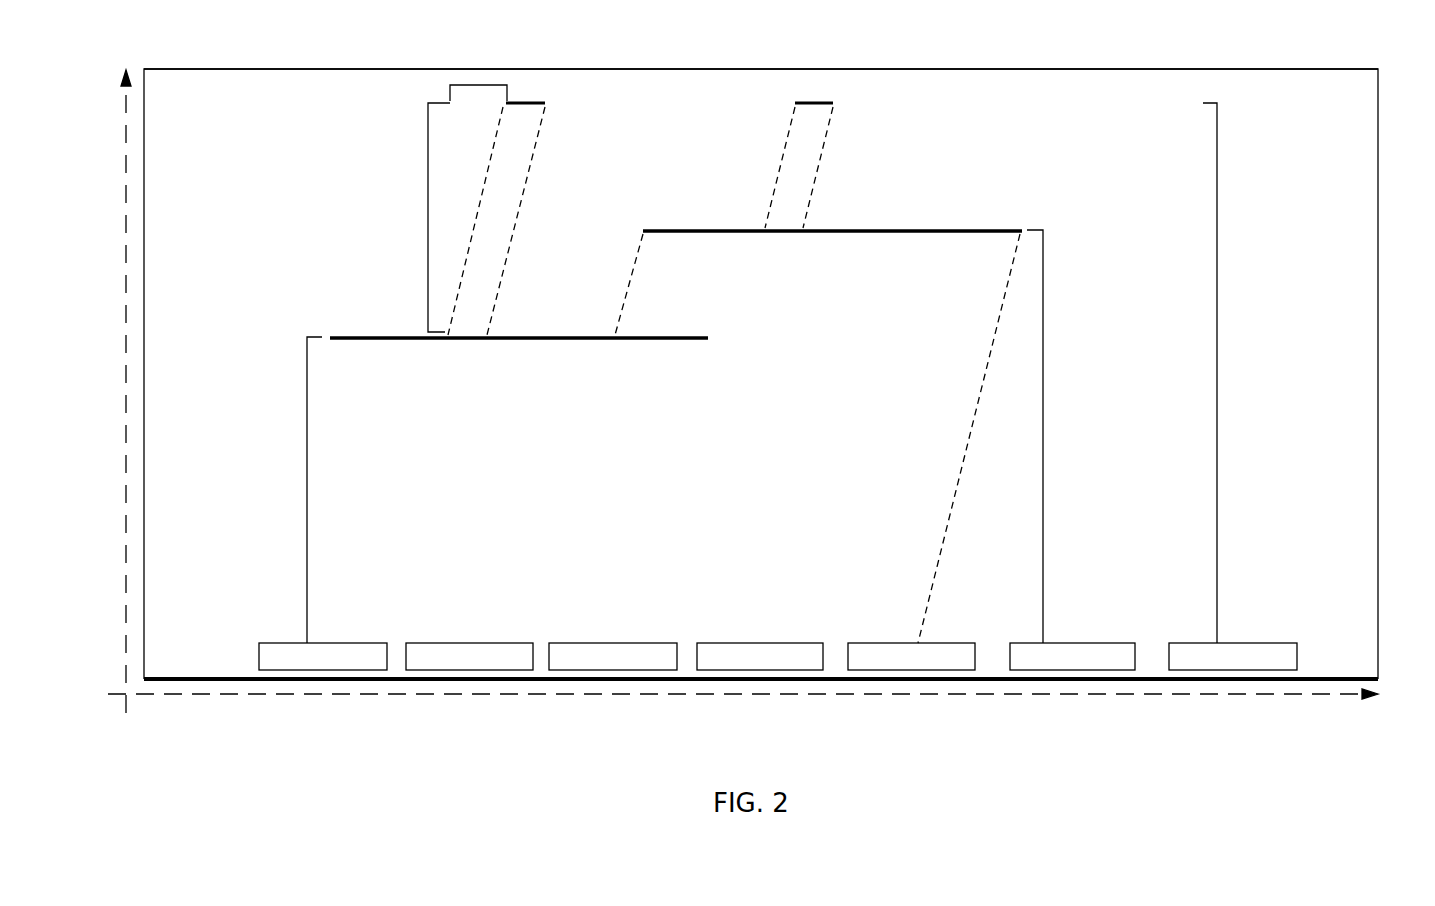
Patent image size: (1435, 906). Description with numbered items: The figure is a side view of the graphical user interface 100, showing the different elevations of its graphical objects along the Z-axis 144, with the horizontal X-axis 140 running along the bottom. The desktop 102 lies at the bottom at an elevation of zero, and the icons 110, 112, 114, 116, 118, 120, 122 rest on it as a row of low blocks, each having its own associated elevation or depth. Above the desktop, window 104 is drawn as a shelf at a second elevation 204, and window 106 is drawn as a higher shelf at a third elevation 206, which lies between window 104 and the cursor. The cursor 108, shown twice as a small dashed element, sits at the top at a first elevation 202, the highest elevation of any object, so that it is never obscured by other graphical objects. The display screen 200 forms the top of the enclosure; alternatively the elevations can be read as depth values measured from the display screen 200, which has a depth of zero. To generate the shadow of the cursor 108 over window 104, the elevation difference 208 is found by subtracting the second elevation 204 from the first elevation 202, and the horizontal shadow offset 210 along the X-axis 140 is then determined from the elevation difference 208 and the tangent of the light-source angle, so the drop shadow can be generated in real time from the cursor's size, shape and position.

The graphical user interface 100 is at (1378, 200).
The desktop graphical interface 102 is at (1308, 678).
The window 104 is at (440, 340).
The window 106 is at (680, 229).
The cursor 108 is at (534, 100).
The icon 110 is at (366, 642).
The icon 112 is at (500, 642).
The icon 114 is at (635, 642).
The icon 116 is at (755, 642).
The icon 118 is at (945, 642).
The icon 120 is at (1093, 642).
The icon 122 is at (1230, 642).
The X-axis 140 is at (400, 696).
The Z-axis 144 is at (126, 560).
The display screen 200 is at (1045, 70).
The elevation Z1 202 is at (1217, 290).
The elevation Z2 204 is at (307, 452).
The elevation Z3 206 is at (1043, 388).
The elevation difference ΔZ1 208 is at (428, 232).
The lateral offset ΔX1 210 is at (478, 80).